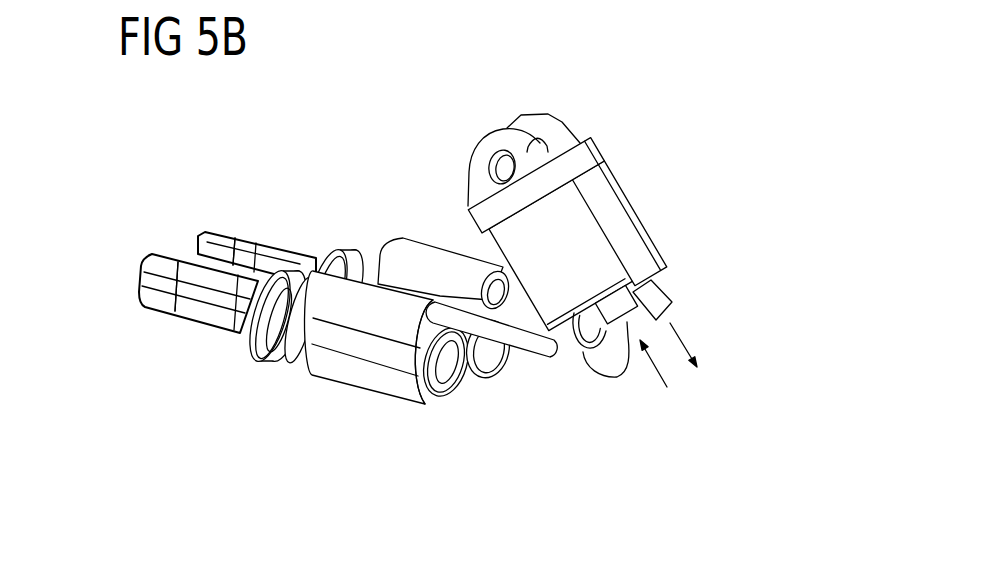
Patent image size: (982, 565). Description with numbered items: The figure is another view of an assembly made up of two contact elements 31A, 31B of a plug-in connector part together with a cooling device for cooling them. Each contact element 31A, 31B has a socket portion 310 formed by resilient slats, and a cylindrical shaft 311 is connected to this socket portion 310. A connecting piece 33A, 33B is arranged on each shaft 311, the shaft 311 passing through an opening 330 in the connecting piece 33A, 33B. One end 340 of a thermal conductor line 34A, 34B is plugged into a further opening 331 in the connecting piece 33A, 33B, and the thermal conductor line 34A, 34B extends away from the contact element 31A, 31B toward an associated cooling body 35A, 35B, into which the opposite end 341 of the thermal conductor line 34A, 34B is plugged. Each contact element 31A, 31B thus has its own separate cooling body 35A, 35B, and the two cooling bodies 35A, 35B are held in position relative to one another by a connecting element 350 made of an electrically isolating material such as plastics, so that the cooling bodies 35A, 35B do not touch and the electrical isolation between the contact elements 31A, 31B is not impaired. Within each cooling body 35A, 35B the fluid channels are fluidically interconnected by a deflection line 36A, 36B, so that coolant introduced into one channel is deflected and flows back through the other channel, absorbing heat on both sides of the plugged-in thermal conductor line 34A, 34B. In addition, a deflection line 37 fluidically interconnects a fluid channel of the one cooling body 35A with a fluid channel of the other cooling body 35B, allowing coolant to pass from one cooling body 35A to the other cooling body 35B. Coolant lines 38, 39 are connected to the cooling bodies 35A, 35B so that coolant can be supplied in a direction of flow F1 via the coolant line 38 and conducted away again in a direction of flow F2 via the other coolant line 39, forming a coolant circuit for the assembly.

The socket portion 310 is at (217, 238).
The contact element 31A is at (195, 326).
The contact element 31B is at (267, 234).
The shaft 311 is at (371, 250).
The connecting piece 33A is at (372, 376).
The connecting piece 33B is at (423, 250).
The opening 330 is at (428, 402).
The opening 331 is at (446, 398).
The end of thermal conductor line 340 is at (503, 263).
The thermal conductor line 34A is at (524, 345).
The thermal conductor line 34B is at (476, 216).
The end of thermal conductor line 341 is at (583, 320).
The cooling body 35A is at (583, 213).
The cooling body 35B is at (632, 213).
The connecting element 350 is at (585, 140).
The deflection line 36A is at (491, 142).
The deflection line 36B is at (541, 127).
The deflection line 37 is at (597, 357).
The coolant line 38 is at (627, 325).
The coolant line 39 is at (655, 286).
The direction of flow F1 is at (666, 380).
The direction of flow F2 is at (702, 360).